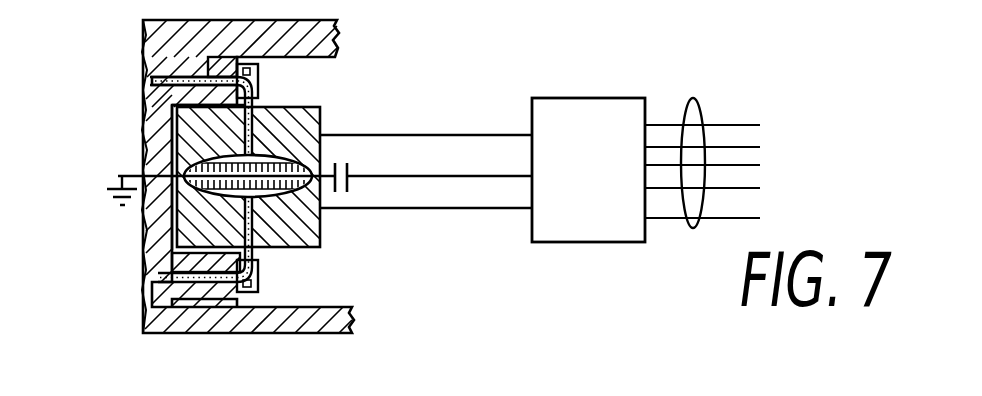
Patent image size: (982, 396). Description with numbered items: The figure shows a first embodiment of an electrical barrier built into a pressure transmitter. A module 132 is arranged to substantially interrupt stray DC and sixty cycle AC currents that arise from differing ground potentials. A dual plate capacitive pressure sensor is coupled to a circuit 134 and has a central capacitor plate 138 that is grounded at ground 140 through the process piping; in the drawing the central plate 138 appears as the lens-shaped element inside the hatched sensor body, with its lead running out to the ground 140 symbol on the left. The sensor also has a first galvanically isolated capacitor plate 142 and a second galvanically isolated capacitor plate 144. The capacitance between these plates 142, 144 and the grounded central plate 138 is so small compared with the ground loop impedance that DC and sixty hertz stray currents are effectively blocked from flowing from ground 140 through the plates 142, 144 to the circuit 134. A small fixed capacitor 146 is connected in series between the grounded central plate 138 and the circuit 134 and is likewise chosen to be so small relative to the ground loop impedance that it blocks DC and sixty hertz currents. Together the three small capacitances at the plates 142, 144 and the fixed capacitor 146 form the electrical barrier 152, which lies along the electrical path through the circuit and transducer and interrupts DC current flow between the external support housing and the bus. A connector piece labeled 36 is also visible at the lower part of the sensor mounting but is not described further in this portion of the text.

The connector terminal 36 is at (280, 222).
The module 132 is at (415, 210).
The circuit 134 is at (620, 223).
The central capacitor plate 138 is at (197, 165).
The ground 140 is at (113, 177).
The first galvanically isolated capacitor plate 142 is at (272, 157).
The second galvanically isolated capacitor plate 144 is at (293, 185).
The fixed capacitor 146 is at (350, 168).
The electrical barrier 152 is at (331, 119).